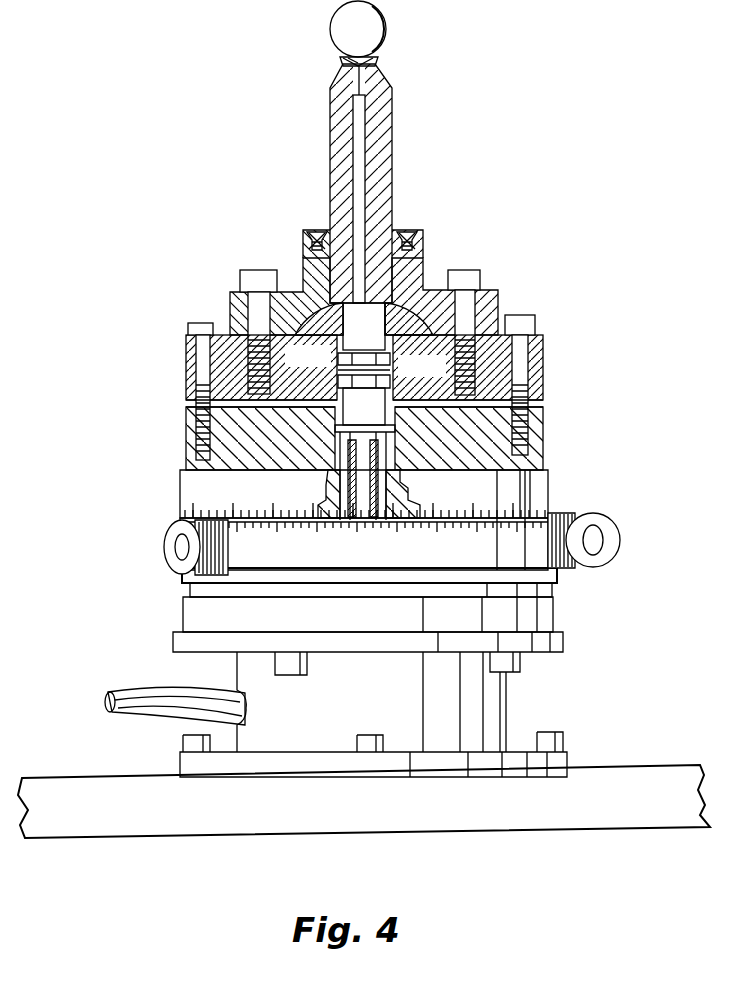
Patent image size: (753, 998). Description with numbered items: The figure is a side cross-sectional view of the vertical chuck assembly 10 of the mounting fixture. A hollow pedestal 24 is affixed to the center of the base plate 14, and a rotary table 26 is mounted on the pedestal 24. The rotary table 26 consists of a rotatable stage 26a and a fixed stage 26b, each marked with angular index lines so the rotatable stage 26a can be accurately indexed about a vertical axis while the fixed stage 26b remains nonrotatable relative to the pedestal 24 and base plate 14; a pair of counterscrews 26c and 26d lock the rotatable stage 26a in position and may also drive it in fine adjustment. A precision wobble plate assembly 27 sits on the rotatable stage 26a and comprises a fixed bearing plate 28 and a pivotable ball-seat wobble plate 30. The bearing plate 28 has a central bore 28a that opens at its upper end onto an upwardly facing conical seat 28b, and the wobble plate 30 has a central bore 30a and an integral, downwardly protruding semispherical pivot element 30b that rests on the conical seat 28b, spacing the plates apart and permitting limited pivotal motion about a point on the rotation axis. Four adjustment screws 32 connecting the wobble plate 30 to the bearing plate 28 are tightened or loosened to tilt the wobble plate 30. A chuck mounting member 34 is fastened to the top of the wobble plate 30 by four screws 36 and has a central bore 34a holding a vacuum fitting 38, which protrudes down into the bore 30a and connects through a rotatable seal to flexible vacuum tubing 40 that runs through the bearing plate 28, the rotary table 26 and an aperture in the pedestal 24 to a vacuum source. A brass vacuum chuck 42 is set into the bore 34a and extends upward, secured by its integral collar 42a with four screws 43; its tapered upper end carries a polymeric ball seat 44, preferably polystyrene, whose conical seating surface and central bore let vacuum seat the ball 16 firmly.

The vertical chuck assembly 10 is at (553, 316).
The base plate 14 is at (557, 812).
The ball 16 is at (372, 19).
The hollow pedestal 24 is at (507, 705).
The rotary table 26 is at (376, 558).
The rotatable stage 26a is at (538, 491).
The fixed stage 26b is at (508, 558).
The counterscrew 26c is at (176, 569).
The counterscrew 26d is at (608, 528).
The precision wobble plate assembly 27 is at (552, 396).
The bearing plate 28 is at (328, 462).
The central bore 28a is at (430, 455).
The conical seat 28b is at (293, 455).
The wobble plate 30 is at (330, 370).
The central bore 30a is at (385, 405).
The semispherical pivot element 30b is at (308, 406).
The adjustment screw 32 is at (188, 341).
The chuck mounting member 34 is at (292, 300).
The central bore 34a is at (303, 290).
The screw 36 is at (466, 302).
The vacuum fitting 38 is at (428, 290).
The flexible vacuum tubing 40 is at (400, 517).
The vacuum chuck 42 is at (383, 137).
The collar 42a is at (418, 231).
The screw 43 is at (404, 232).
The ball seat 44 is at (375, 62).